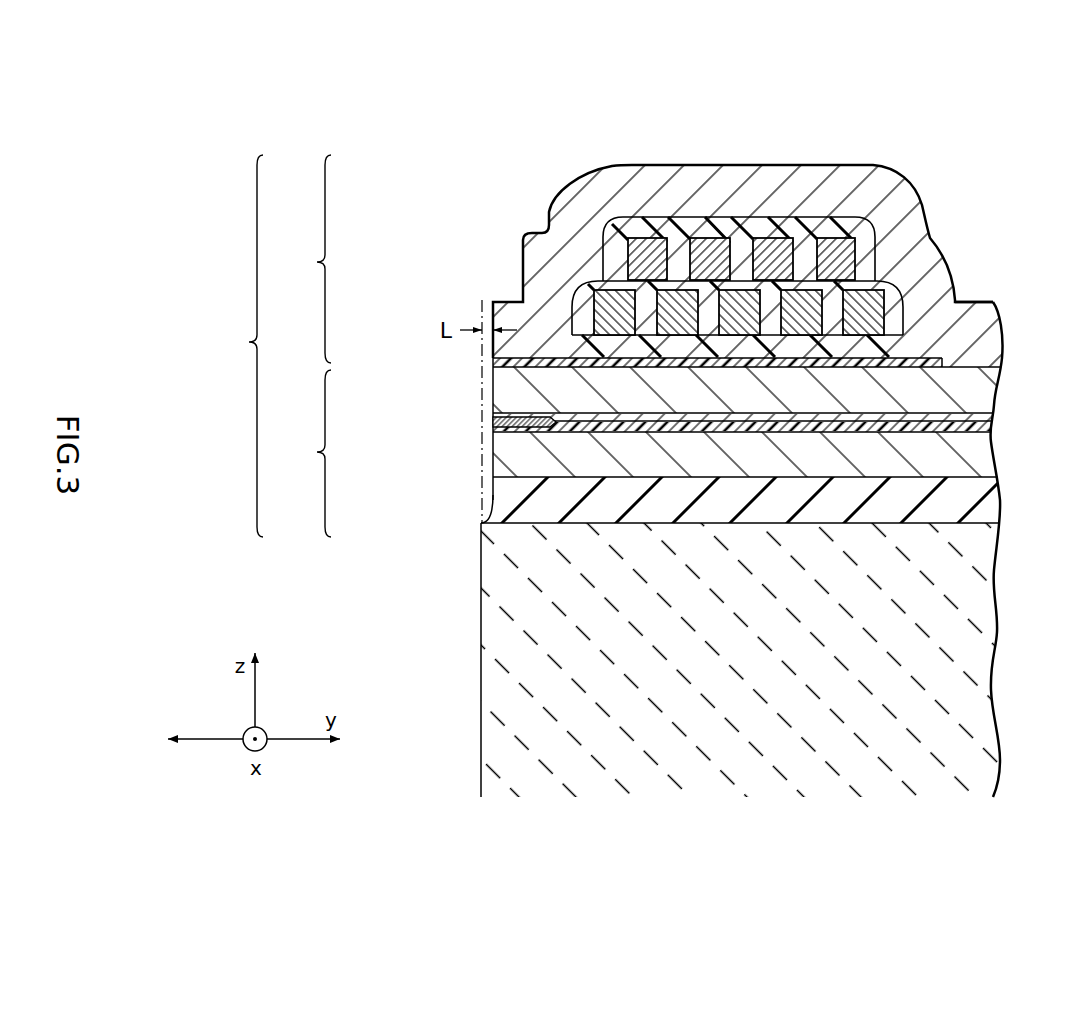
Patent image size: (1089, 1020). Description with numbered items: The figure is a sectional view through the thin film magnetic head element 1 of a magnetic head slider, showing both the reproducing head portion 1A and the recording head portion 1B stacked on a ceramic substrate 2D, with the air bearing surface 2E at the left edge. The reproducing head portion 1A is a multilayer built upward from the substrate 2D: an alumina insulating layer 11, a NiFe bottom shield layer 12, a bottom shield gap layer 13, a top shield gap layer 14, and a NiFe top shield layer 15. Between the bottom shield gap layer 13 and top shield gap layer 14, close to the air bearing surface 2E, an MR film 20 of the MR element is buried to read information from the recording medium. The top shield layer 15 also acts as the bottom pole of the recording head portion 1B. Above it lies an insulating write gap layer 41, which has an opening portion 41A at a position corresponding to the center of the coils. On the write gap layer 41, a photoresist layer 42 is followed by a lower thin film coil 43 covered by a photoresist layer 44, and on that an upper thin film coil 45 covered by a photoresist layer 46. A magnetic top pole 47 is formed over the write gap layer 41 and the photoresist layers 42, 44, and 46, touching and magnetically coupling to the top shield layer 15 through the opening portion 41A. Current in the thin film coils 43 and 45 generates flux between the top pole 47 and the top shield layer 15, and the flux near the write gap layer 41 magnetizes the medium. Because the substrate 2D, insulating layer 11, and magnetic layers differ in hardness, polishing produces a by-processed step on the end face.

The thin film magnetic head element 1 is at (249, 342).
The reproducing head portion 1A is at (317, 452).
The recording head portion 1B is at (317, 262).
The substrate 2D is at (497, 607).
The air bearing surface 2E is at (481, 717).
The insulating layer 11 is at (493, 509).
The bottom shield layer 12 is at (493, 461).
The bottom shield gap layer 13 is at (984, 430).
The top shield gap layer 14 is at (978, 419).
The top shield layer 15 is at (493, 387).
The MR film 20 is at (493, 423).
The write gap layer 41 is at (521, 362).
The opening portion 41A is at (965, 338).
The photoresist layer 42 is at (573, 350).
The thin film coil 43 is at (673, 296).
The photoresist layer 44 is at (747, 288).
The thin film coil 45 is at (783, 248).
The photoresist layer 46 is at (822, 226).
The top pole 47 is at (914, 200).